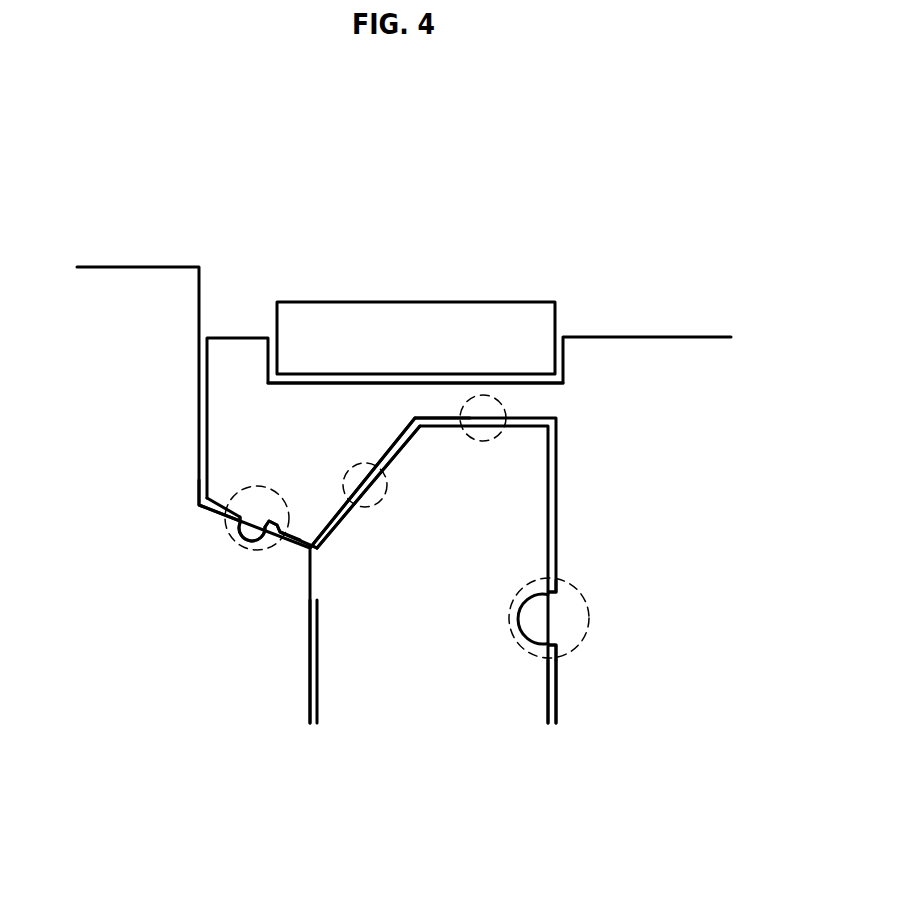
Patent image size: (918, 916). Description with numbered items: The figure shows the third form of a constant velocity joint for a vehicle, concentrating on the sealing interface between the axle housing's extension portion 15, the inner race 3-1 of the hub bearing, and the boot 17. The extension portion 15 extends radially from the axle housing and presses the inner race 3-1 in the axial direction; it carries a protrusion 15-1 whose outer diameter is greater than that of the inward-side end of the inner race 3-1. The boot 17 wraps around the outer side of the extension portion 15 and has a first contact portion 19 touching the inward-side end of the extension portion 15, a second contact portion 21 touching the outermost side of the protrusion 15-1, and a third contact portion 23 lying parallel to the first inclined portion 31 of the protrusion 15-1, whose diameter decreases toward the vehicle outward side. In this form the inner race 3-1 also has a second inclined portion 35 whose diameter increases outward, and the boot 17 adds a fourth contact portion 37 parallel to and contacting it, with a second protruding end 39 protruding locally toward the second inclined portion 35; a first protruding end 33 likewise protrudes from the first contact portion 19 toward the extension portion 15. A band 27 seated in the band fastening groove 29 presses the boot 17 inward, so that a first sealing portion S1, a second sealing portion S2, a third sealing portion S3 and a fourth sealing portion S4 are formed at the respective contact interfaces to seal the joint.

The inner race 3-1 is at (152, 293).
The boot 17 is at (592, 352).
The band 27 is at (330, 317).
The band fastening groove 29 is at (373, 378).
The second contact portion 21 is at (483, 433).
The first inclined portion 31 is at (400, 437).
The third sealing portion S3 is at (347, 472).
The second sealing portion S2 is at (502, 402).
The protrusion 15-1 is at (477, 495).
The second inclined portion 35 is at (210, 515).
The fourth sealing portion S4 is at (227, 533).
The second protruding end 39 is at (245, 547).
The fourth contact portion 37 is at (293, 548).
The third contact portion 23 is at (340, 517).
The extension portion 15 is at (415, 658).
The first contact portion 19 is at (557, 566).
The first protruding end 33 is at (530, 623).
The first sealing portion S1 is at (587, 630).